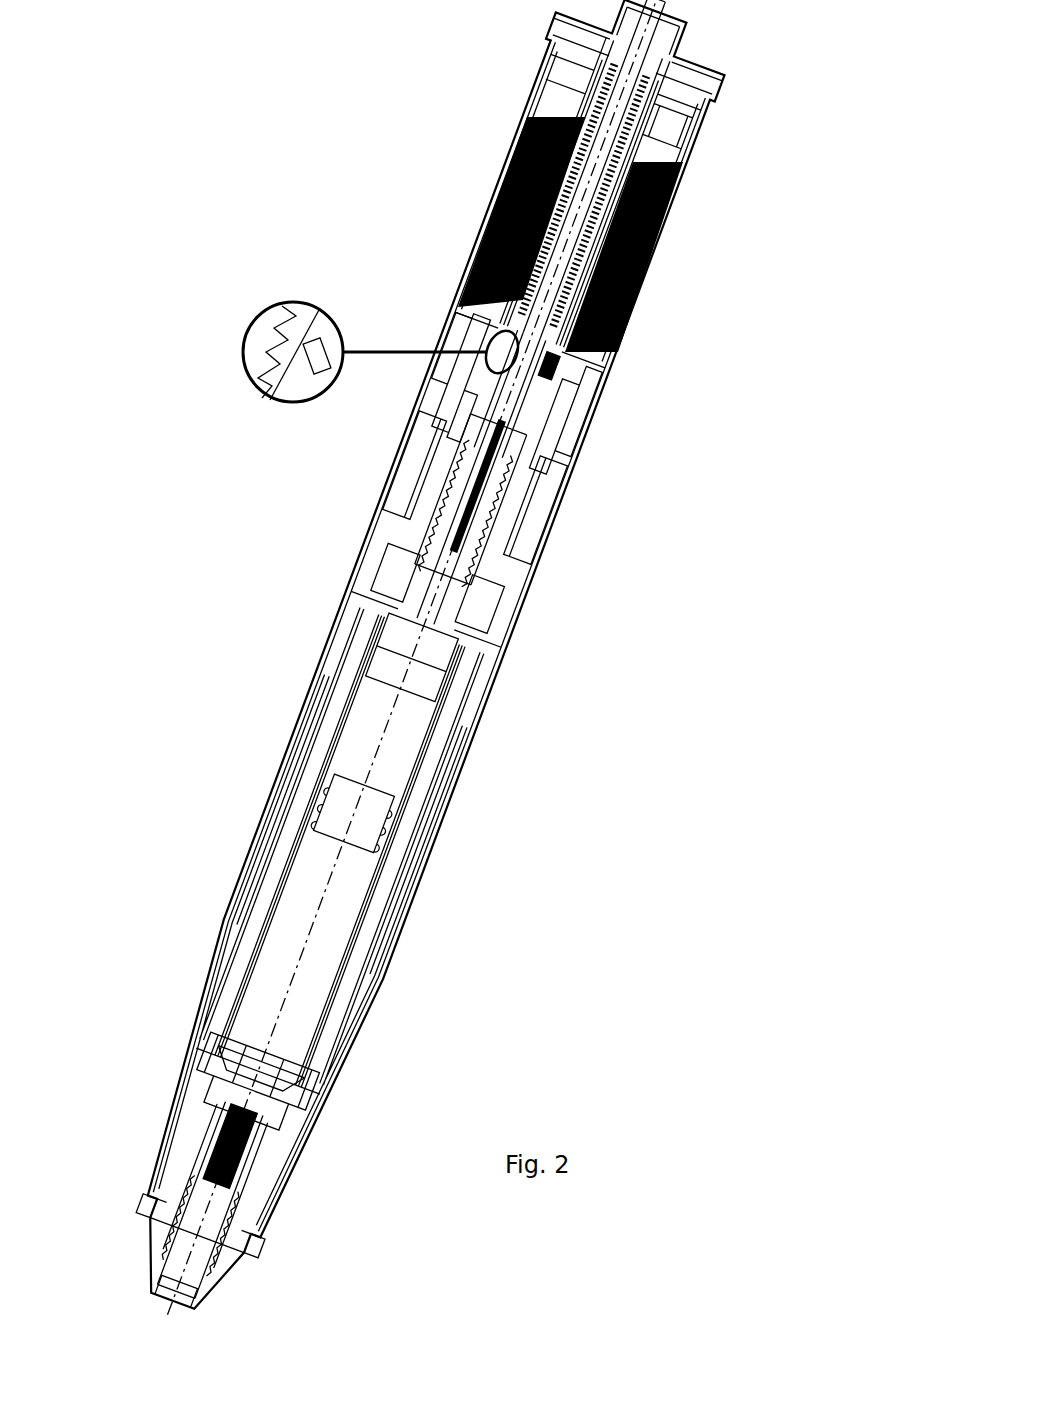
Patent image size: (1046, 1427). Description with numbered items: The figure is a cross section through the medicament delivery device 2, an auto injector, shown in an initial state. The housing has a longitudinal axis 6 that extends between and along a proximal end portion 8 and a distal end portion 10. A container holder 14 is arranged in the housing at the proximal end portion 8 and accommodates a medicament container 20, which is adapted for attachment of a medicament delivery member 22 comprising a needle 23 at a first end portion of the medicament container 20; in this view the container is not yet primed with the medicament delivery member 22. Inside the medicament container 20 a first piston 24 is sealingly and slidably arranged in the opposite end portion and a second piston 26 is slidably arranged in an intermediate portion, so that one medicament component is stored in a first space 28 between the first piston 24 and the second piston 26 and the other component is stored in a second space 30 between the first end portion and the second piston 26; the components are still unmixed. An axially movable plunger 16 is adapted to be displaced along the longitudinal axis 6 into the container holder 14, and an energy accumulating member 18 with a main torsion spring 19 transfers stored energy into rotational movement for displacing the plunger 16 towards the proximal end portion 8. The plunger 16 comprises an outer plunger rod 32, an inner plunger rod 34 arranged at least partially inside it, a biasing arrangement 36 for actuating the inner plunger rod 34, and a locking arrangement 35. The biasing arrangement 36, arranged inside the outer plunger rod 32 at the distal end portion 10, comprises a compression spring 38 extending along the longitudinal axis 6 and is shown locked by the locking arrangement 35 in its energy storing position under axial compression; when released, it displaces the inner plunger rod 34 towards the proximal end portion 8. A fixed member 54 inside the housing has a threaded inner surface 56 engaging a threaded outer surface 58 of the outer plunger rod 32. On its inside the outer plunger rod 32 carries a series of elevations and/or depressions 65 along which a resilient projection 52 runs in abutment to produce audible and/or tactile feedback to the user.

The medicament delivery device 2 is at (252, 157).
The longitudinal axis 6 is at (173, 1310).
The proximal end portion 8 is at (320, 1185).
The distal end portion 10 is at (470, 140).
The container holder 14 is at (400, 449).
The plunger 16 is at (412, 595).
The energy accumulating member 18 is at (464, 205).
The main torsion spring 19 is at (478, 229).
The medicament container 20 is at (255, 1049).
The medicament delivery member 22 is at (200, 1192).
The needle 23 is at (186, 1249).
The first piston 24 is at (438, 645).
The second piston 26 is at (357, 804).
The first space 28 is at (398, 722).
The second space 30 is at (300, 999).
The outer plunger rod 32 is at (520, 424).
The inner plunger rod 34 is at (513, 382).
The locking arrangement 35 is at (690, 39).
The biasing arrangement 36 is at (668, 127).
The compression spring 38 is at (612, 89).
The resilient projection 52 is at (343, 337).
The fixed member 54 is at (482, 559).
The threaded inner surface 56 is at (460, 582).
The threaded outer surface 58 is at (497, 502).
The series of elevations and/or depressions 65 is at (300, 338).